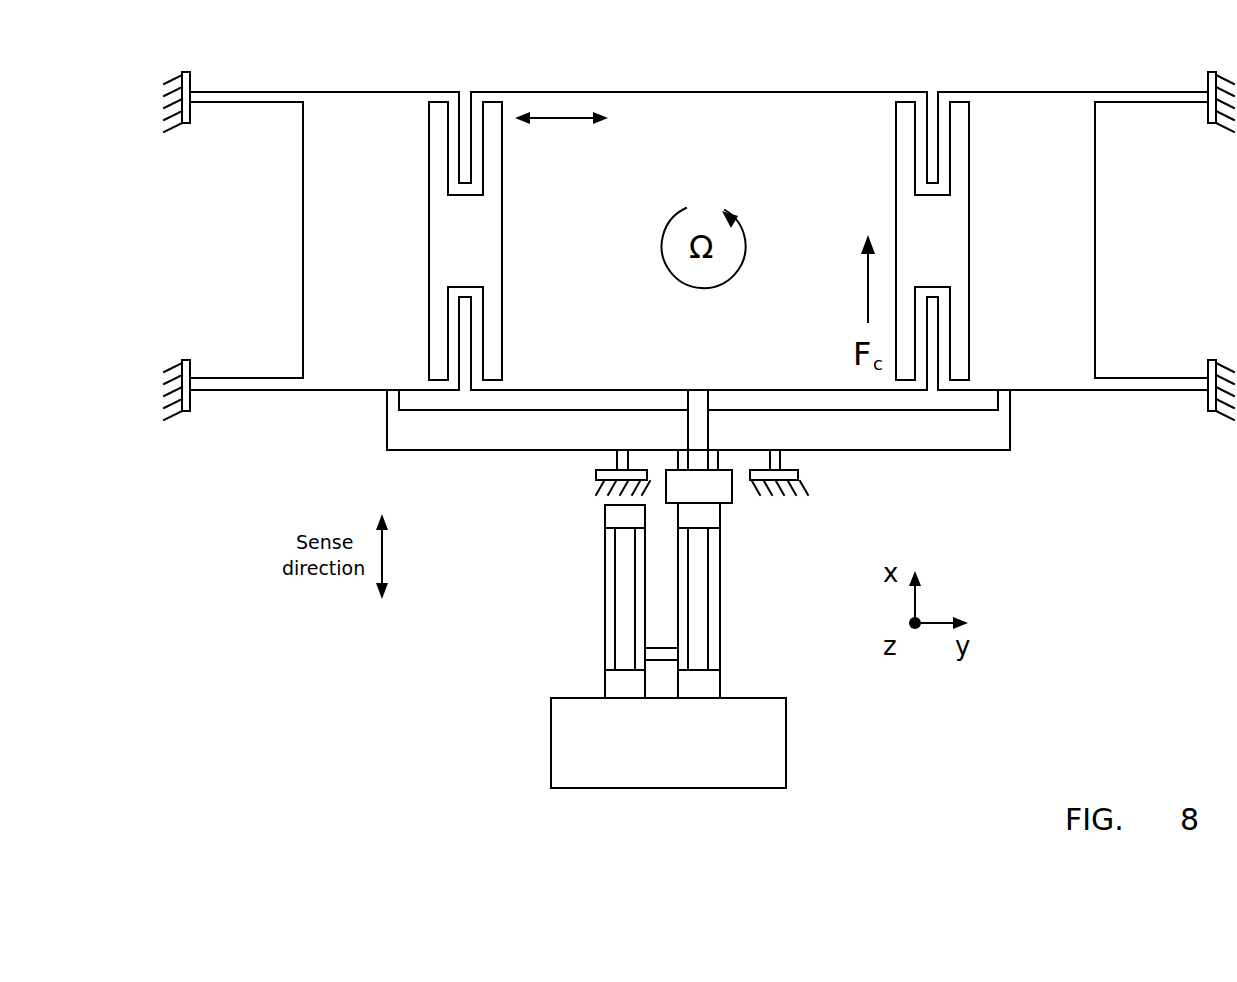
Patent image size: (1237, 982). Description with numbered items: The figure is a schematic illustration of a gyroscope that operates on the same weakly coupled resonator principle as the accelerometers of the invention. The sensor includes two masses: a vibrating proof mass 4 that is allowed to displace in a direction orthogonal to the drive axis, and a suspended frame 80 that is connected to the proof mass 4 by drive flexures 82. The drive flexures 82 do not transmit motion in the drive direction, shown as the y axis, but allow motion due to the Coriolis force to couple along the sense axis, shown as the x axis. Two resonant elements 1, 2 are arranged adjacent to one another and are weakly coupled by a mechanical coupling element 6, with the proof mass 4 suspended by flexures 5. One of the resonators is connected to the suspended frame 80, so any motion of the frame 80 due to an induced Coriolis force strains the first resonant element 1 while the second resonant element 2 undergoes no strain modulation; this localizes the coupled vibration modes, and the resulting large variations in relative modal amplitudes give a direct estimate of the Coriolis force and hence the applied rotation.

The first resonant element 1 is at (713, 562).
The second resonant element 2 is at (610, 590).
The proof mass 4 is at (711, 357).
The flexures 5 is at (662, 662).
The mechanical coupling element 6 is at (568, 750).
The suspended frame 80 is at (352, 347).
The drive flexures 82 is at (455, 243).